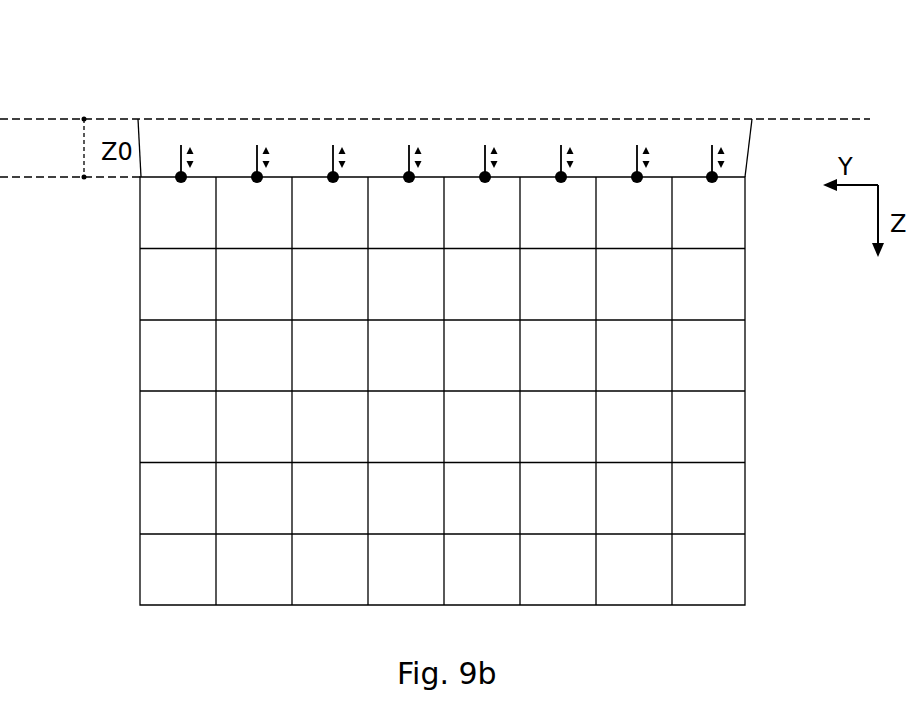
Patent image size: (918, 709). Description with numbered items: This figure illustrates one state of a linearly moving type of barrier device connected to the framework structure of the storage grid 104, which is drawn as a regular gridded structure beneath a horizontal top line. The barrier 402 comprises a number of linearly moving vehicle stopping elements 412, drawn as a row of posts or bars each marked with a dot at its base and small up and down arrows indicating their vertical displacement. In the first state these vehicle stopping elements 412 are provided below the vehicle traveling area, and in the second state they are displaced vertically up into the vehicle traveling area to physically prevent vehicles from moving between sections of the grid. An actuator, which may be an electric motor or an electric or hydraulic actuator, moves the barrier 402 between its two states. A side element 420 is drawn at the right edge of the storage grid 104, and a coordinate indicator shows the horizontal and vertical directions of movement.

The storage grid 104 is at (92, 357).
The barrier 402 is at (162, 128).
The vehicle stopping element 412 is at (562, 153).
The side wall 420 is at (753, 143).